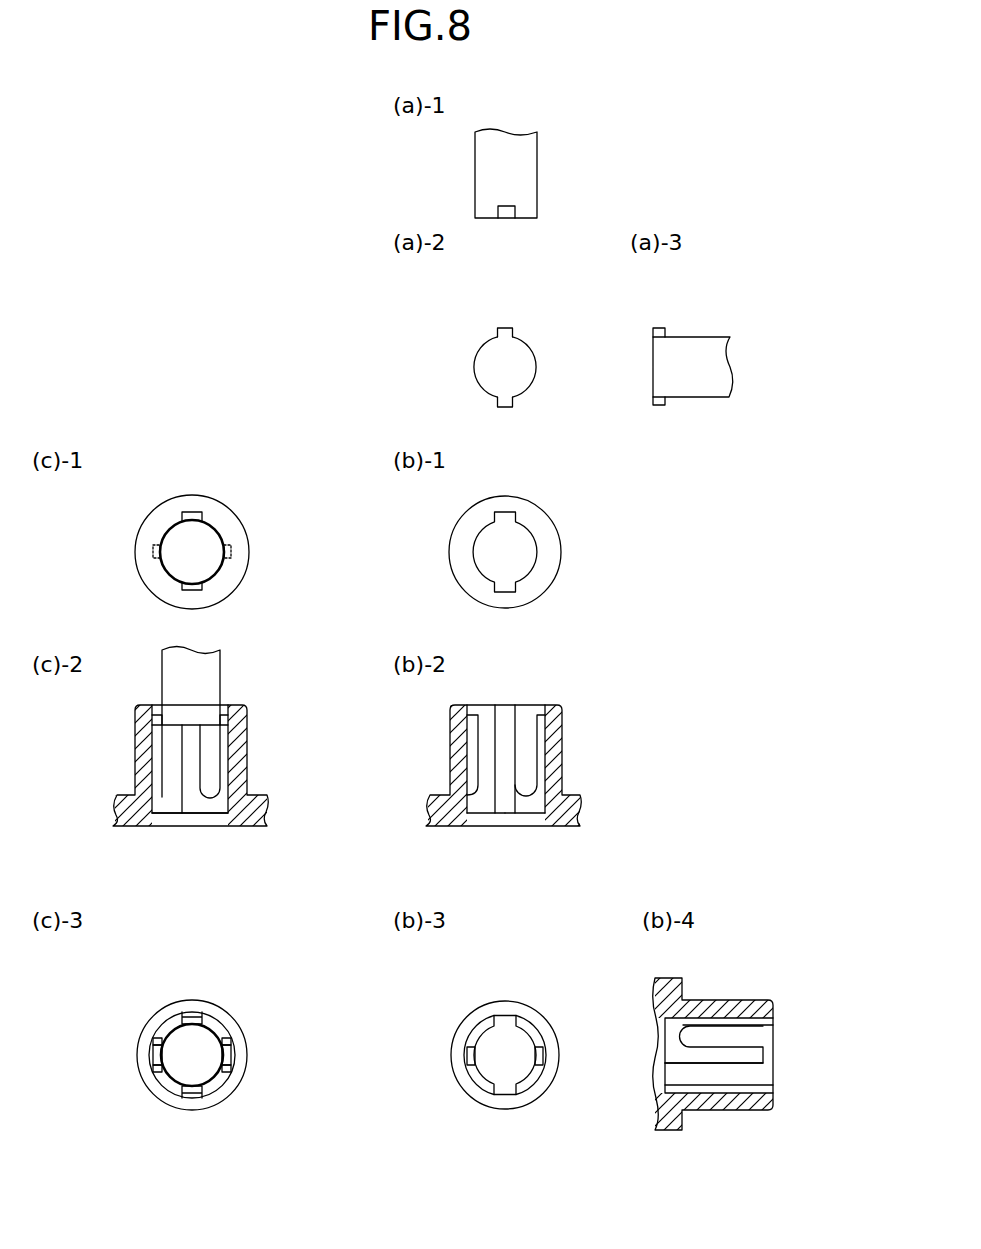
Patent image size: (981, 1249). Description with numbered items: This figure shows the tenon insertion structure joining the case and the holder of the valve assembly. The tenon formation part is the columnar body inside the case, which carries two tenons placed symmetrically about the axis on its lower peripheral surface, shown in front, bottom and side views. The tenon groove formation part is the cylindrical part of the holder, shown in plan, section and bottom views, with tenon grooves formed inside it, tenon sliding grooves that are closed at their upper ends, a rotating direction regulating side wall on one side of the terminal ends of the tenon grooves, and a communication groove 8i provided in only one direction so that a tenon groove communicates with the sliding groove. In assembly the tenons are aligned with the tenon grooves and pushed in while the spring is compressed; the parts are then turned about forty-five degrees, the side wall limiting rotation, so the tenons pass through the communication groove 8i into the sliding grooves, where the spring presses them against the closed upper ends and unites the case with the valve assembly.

The communication groove 8i is at (528, 807).